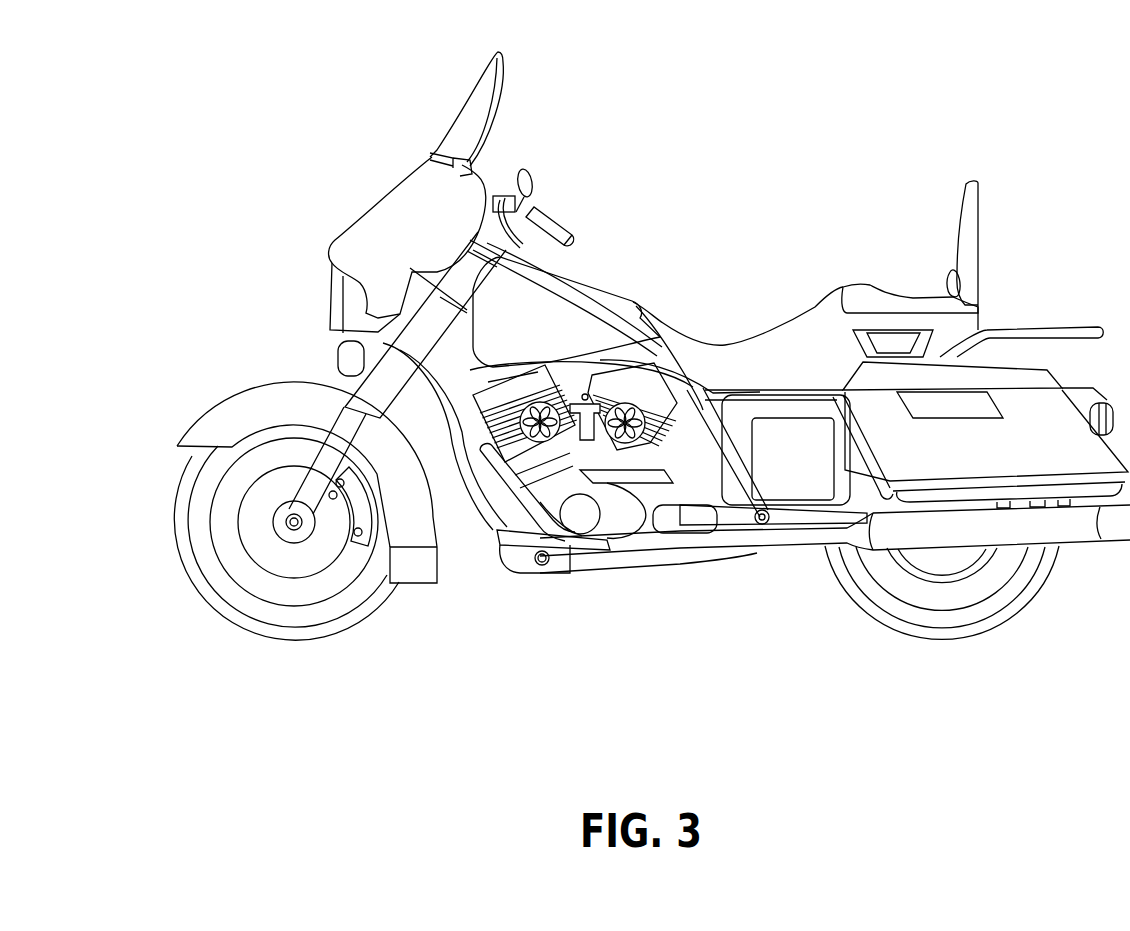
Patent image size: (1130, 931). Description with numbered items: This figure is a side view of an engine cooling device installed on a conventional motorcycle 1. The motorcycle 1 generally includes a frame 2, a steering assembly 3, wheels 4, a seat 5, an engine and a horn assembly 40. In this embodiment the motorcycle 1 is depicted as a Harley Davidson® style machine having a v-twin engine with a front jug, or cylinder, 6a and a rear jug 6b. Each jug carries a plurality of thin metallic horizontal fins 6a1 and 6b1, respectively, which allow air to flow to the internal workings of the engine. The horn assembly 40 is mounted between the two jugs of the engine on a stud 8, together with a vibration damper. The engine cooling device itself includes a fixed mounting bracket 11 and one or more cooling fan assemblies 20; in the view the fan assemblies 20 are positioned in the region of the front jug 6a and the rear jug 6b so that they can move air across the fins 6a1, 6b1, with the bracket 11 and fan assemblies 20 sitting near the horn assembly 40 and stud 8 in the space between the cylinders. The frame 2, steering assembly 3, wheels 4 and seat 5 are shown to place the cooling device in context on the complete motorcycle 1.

The motorcycle 1 is at (809, 254).
The frame 2 is at (513, 570).
The steering assembly 3 is at (548, 214).
The wheels 4 is at (332, 628).
The seat 5 is at (821, 366).
The front jug (cylinder) 6a is at (508, 380).
The rear jug 6b is at (628, 377).
The fins 6a1 is at (478, 441).
The fins 6b1 is at (700, 470).
The stud 8 is at (591, 451).
The fixed mounting bracket 11 is at (571, 432).
The cooling fan assemblies 20 is at (586, 394).
The horn assembly 40 is at (590, 430).